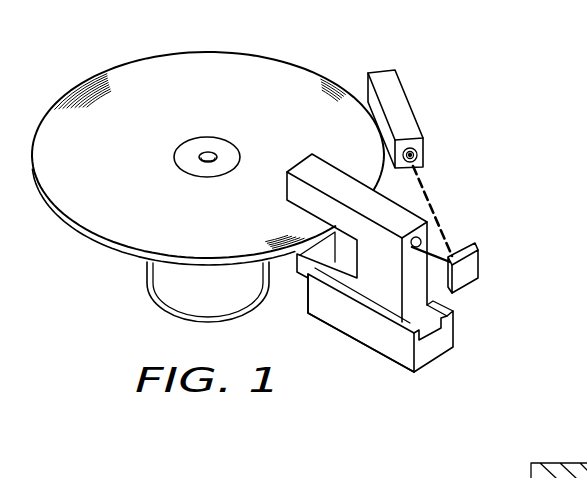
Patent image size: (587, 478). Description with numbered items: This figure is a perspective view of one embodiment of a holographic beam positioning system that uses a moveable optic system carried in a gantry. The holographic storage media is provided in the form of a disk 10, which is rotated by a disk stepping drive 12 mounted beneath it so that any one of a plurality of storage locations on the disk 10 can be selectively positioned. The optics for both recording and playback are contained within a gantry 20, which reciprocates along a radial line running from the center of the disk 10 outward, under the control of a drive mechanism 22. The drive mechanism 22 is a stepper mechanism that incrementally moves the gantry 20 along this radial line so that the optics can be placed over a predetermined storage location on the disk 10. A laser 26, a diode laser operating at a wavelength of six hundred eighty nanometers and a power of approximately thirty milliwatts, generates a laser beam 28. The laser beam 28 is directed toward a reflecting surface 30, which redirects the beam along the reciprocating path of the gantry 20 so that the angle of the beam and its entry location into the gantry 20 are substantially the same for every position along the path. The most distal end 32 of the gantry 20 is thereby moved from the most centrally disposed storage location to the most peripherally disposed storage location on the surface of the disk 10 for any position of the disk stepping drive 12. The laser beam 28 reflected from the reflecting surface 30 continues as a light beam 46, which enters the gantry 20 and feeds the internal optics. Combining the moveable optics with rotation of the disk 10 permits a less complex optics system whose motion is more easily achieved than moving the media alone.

The disk 10 is at (128, 72).
The disk stepping drive 12 is at (170, 300).
The gantry 20 is at (388, 297).
The drive mechanism 22 is at (342, 322).
The laser 26 is at (395, 92).
The laser beam 28 is at (432, 193).
The reflecting surface 30 is at (468, 282).
The most distal end 32 is at (300, 165).
The light beam 46 is at (440, 252).